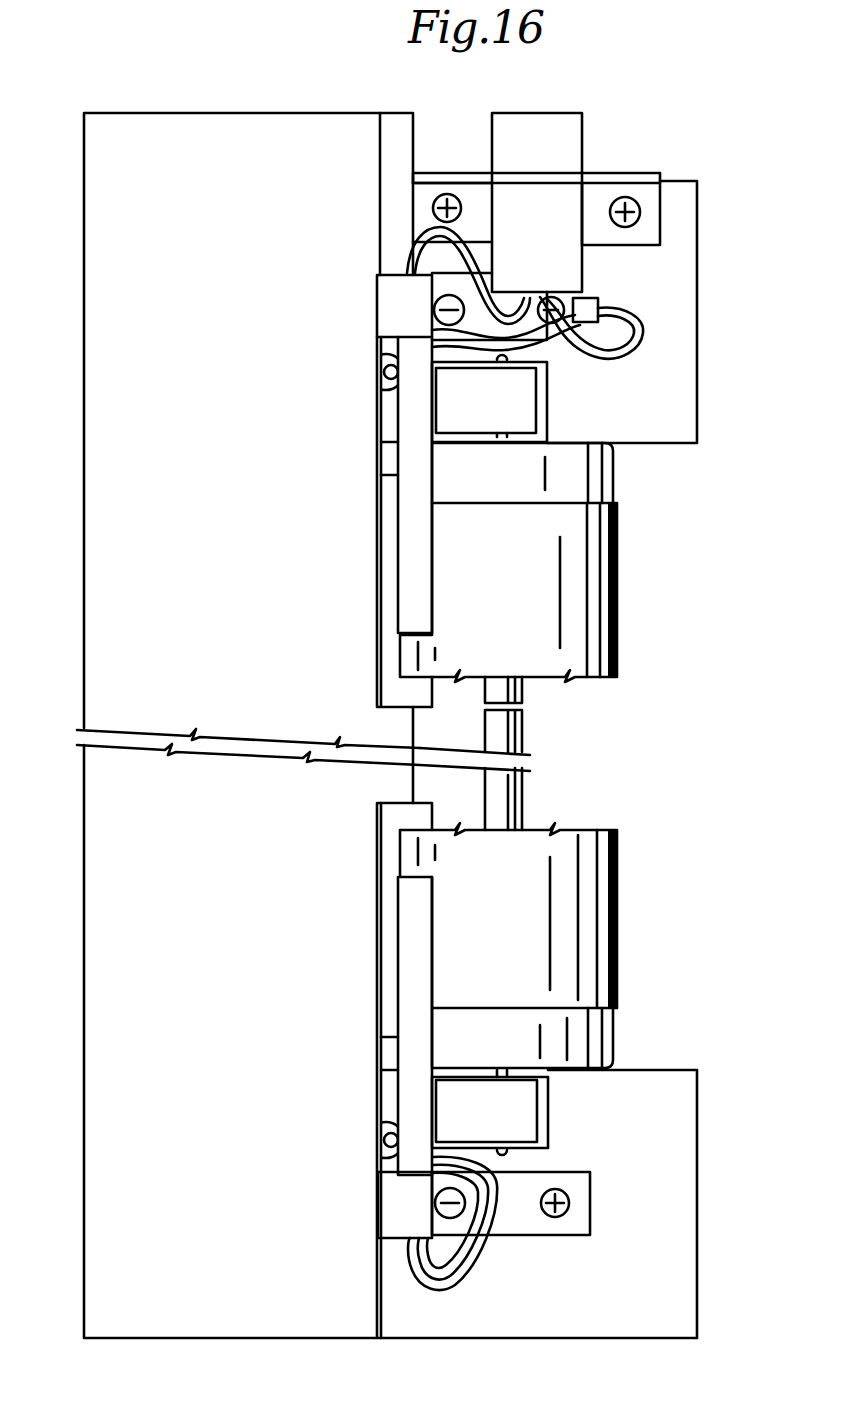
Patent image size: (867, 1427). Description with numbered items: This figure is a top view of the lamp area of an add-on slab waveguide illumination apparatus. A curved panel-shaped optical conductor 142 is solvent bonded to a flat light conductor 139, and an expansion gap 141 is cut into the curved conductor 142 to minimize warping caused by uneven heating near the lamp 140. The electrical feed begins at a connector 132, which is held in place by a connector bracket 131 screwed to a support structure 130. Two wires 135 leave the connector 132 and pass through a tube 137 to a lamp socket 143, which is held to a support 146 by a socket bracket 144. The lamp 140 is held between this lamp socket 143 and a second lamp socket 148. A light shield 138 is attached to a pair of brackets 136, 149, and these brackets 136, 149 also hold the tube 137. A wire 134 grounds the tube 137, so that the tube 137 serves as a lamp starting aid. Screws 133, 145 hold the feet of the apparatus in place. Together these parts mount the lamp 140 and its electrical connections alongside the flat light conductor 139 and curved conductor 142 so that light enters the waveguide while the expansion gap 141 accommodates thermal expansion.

The support structure 130 is at (685, 246).
The connector bracket 131 is at (650, 201).
The connector 132 is at (567, 133).
The screw 133 is at (433, 312).
The wire 134 is at (645, 334).
The wires 135 is at (428, 203).
The bracket 136 is at (392, 298).
The tube 137 is at (405, 482).
The light shield 138 is at (380, 587).
The flat light conductor 139 is at (112, 459).
The lamp 140 is at (590, 572).
The expansion gap 141 is at (522, 707).
The curved panel-shaped optical conductor 142 is at (515, 783).
The lamp socket 143 is at (525, 1104).
The socket bracket 144 is at (548, 1116).
The screw 145 is at (434, 1197).
The support 146 is at (683, 1300).
The lamp socket 148 is at (535, 373).
The bracket 149 is at (390, 1211).